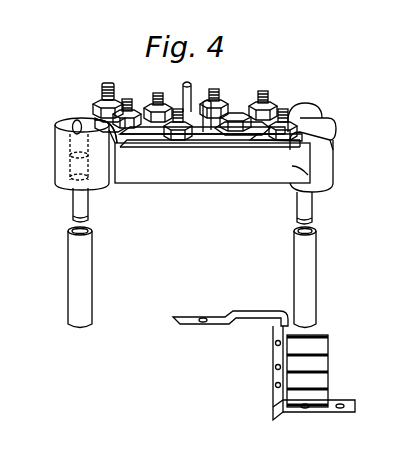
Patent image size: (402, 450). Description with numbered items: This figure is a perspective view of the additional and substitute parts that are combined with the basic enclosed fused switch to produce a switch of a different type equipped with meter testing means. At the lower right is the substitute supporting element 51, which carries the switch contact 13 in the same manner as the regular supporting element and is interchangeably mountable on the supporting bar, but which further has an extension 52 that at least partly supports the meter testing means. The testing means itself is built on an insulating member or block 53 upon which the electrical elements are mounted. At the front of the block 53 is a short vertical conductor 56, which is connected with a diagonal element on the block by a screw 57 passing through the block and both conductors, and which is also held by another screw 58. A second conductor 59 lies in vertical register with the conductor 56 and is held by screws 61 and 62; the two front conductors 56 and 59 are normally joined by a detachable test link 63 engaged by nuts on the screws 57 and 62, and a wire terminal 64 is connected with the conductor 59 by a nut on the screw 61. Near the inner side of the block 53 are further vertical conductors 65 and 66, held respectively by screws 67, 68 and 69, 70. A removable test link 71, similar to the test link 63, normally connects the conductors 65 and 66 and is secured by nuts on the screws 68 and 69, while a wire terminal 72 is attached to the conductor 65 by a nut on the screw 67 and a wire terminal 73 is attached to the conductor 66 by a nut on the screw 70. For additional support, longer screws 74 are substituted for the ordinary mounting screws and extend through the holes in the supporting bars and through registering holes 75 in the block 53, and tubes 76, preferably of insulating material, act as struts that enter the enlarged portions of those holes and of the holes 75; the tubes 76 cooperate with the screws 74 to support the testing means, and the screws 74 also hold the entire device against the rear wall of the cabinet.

The switch contact 13 is at (324, 360).
The substitute supporting element 51 is at (279, 405).
The extension 52 is at (217, 323).
The insulating member or block 53 is at (170, 185).
The short vertical conductor 56 is at (97, 108).
The screw 57 is at (157, 93).
The screw 58 is at (106, 82).
The second conductor 59 is at (230, 115).
The screw 61 is at (263, 91).
The screw 62 is at (212, 88).
The detachable test link 63 is at (194, 78).
The wire terminal 64 is at (305, 107).
The vertical conductor 65 is at (262, 141).
The vertical conductor 66 is at (160, 147).
The screw 67 is at (283, 109).
The screw 68 is at (240, 125).
The screw 69 is at (178, 109).
The screw 70 is at (134, 93).
The removable test link 71 is at (215, 134).
The wire terminal 72 is at (334, 130).
The wire terminal 73 is at (62, 127).
The longer screw 74 is at (76, 197).
The hole 75 is at (75, 160).
The tube 76 is at (92, 272).